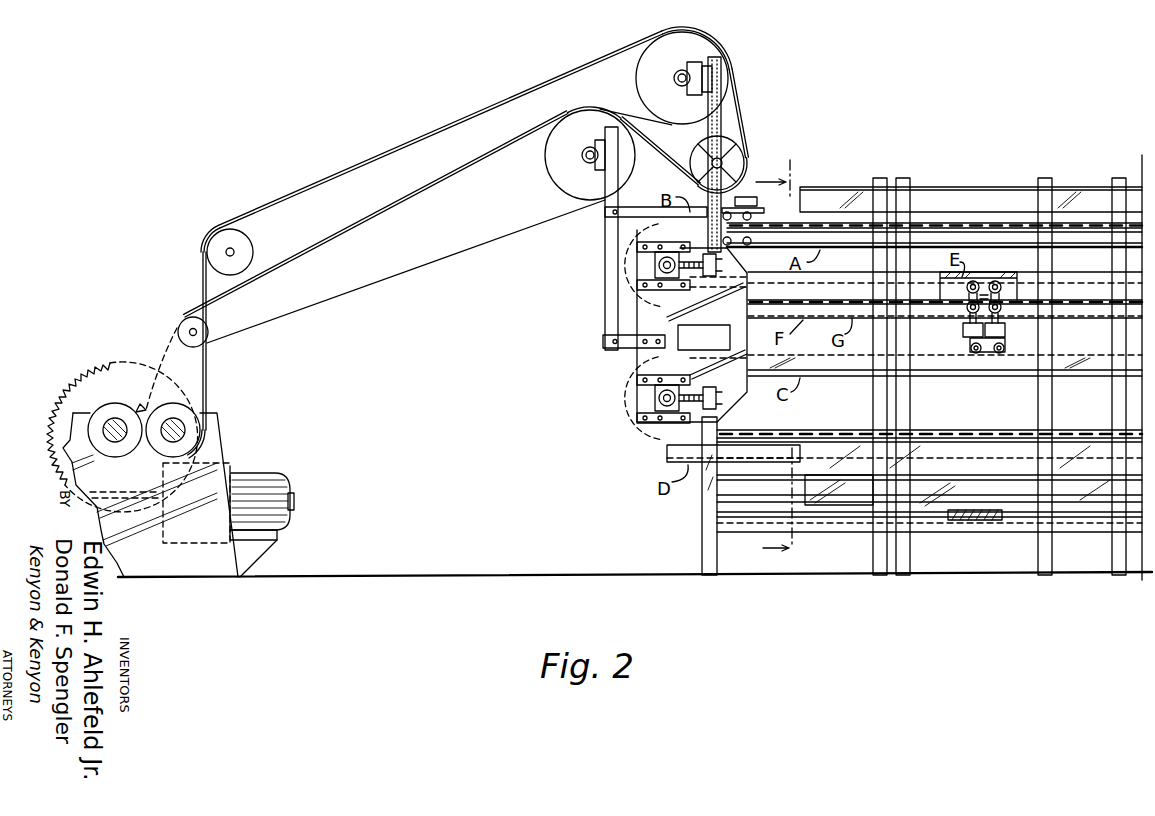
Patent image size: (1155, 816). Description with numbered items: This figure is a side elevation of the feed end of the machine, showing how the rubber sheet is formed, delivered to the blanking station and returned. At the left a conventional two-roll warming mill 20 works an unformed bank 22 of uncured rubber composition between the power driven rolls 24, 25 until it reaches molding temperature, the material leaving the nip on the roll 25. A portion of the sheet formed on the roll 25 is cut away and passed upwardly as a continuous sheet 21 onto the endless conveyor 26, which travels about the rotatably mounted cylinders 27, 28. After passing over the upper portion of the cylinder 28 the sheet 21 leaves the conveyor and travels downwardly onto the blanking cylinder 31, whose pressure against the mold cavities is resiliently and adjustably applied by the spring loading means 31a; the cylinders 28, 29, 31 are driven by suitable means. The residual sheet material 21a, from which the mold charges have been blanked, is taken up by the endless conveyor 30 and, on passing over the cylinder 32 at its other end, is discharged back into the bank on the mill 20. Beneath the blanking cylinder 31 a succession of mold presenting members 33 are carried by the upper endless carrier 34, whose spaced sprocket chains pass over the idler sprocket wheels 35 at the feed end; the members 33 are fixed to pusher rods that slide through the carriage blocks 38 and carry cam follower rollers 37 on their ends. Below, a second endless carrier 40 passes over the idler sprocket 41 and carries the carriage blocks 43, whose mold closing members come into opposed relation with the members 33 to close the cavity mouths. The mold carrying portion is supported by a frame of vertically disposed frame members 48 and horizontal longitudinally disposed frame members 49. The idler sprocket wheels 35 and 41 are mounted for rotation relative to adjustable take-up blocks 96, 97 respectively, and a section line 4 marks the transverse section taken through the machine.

The section line 4- 4 is at (785, 363).
The warming mill 20 is at (239, 428).
The continuous sheet 21 is at (208, 373).
The residual sheet material 21a is at (672, 160).
The unformed bank 22 is at (140, 400).
The power driven roll 24 is at (95, 440).
The power driven roll 25 is at (156, 455).
The endless conveyor 26 is at (405, 125).
The cylinder 27 is at (248, 238).
The cylinder 28 is at (675, 45).
The cylinder 29 is at (557, 168).
The endless conveyor 30 is at (401, 275).
The blanking cylinder 31 is at (702, 147).
The spring loading means 31a is at (744, 195).
The cylinder 32 is at (206, 326).
The mold presenting members 33 is at (1004, 332).
The upper endless carrier 34 is at (830, 225).
The idler sprocket wheels 35 is at (643, 268).
The cam follower rollers 37 is at (976, 281).
The carriage blocks 38 is at (968, 315).
The second endless carrier 40 is at (1093, 432).
The idler sprocket 41 is at (643, 401).
The carriage blocks 43 is at (990, 353).
The vertically disposed frame members 48 is at (885, 412).
The horizontal longitudinally disposed frame members 49 is at (1003, 274).
The adjustable take-up block 96 is at (660, 282).
The adjustable take-up block 97 is at (662, 418).